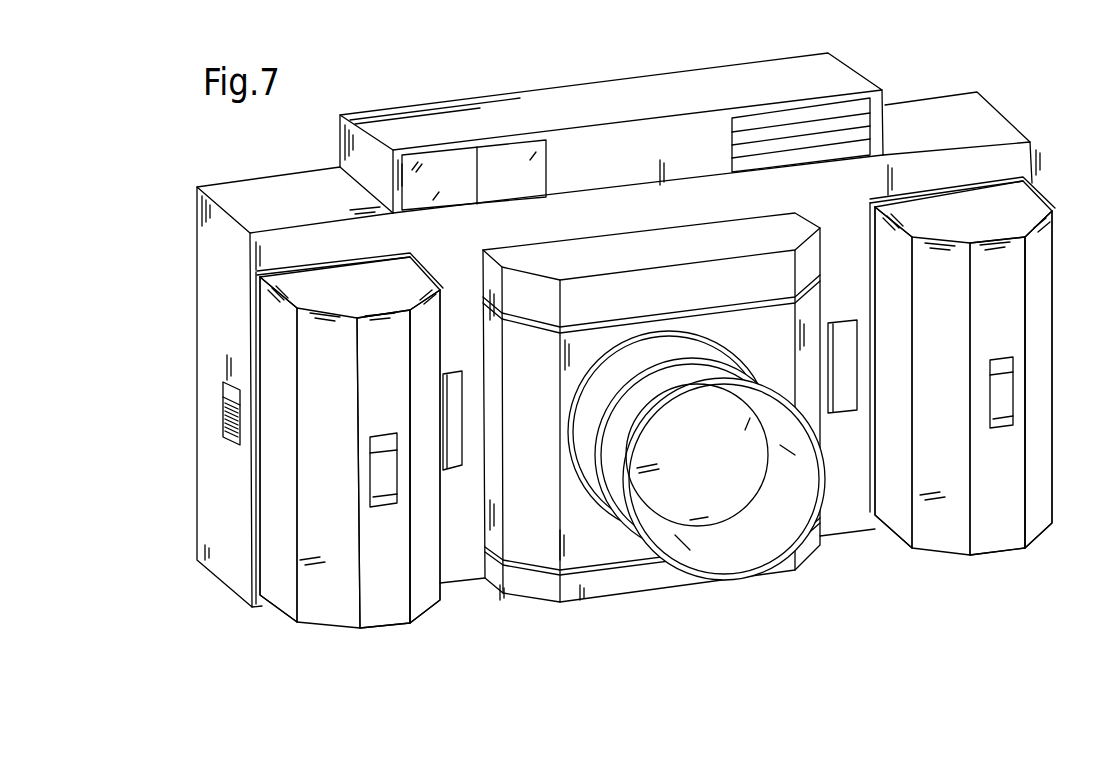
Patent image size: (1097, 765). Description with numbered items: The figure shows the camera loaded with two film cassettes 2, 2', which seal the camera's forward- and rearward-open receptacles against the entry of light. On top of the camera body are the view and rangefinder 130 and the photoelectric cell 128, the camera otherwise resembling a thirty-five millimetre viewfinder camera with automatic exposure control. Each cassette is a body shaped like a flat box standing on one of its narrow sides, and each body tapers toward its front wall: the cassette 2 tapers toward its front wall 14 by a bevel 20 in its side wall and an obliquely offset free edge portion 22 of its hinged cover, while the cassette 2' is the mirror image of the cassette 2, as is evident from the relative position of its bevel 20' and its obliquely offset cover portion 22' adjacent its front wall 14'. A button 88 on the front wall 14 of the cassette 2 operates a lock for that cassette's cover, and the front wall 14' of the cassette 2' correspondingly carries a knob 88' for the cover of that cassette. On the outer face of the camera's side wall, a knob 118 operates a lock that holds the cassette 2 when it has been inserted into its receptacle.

The film cassette 2 is at (349, 473).
The film cassette 2' is at (962, 393).
The front wall 14 is at (398, 488).
The front wall 14' is at (994, 420).
The bevel 20 is at (447, 465).
The bevel 20' is at (904, 399).
The obliquely offset free edge portion 22 is at (294, 478).
The obliquely offset cover portion 22' is at (1053, 394).
The button 88 is at (357, 474).
The knob 88' is at (972, 392).
The knob 118 is at (222, 433).
The photoelectric cell 128 is at (772, 120).
The view and rangefinder 130 is at (499, 157).